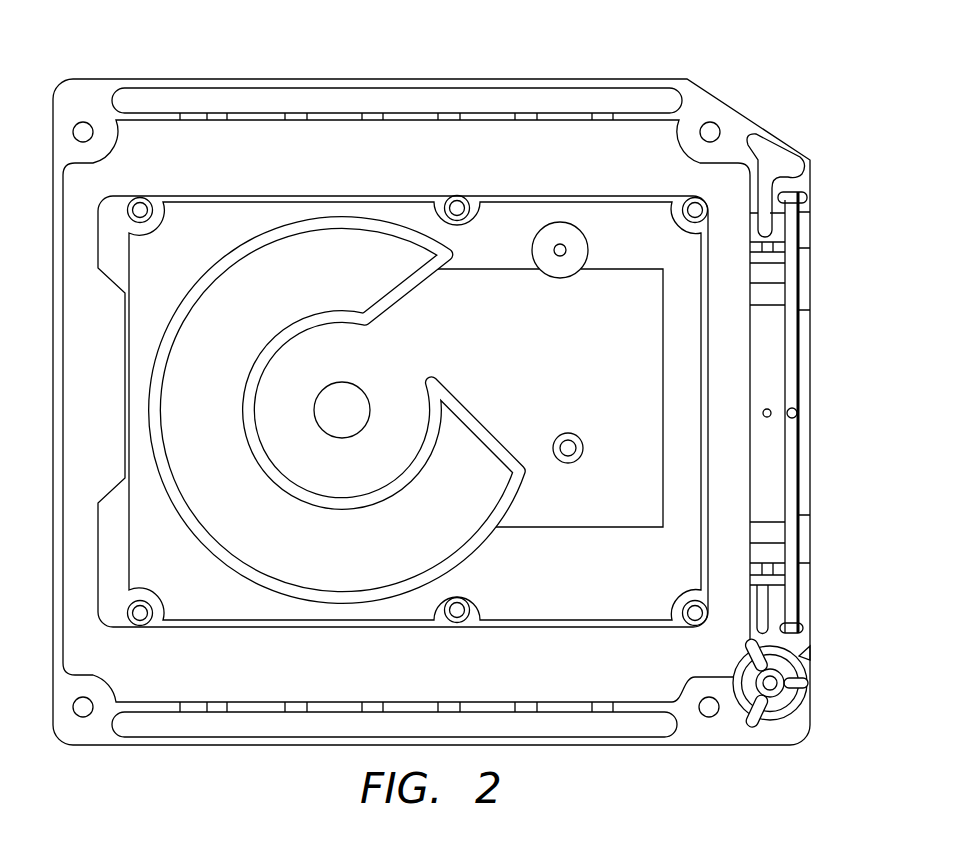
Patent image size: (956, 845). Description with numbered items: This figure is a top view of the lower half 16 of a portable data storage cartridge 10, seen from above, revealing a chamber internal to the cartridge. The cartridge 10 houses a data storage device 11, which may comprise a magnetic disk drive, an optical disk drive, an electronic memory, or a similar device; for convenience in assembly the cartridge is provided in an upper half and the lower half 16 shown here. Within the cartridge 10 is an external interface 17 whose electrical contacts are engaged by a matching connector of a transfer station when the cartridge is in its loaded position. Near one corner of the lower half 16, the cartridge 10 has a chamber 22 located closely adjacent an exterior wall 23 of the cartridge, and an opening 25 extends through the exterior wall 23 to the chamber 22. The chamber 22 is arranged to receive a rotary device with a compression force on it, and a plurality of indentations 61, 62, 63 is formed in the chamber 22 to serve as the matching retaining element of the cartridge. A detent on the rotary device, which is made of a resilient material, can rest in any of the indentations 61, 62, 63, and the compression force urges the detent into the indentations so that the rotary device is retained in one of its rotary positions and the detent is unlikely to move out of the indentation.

The portable data storage cartridge 10 is at (551, 62).
The data storage device 11 is at (367, 197).
The lower half 16 is at (242, 79).
The external interface 17 is at (812, 366).
The chamber 22 is at (740, 680).
The exterior wall 23 is at (810, 628).
The opening 25 is at (810, 659).
The indentation 61 is at (800, 684).
The indentation 62 is at (745, 727).
The indentation 63 is at (750, 642).